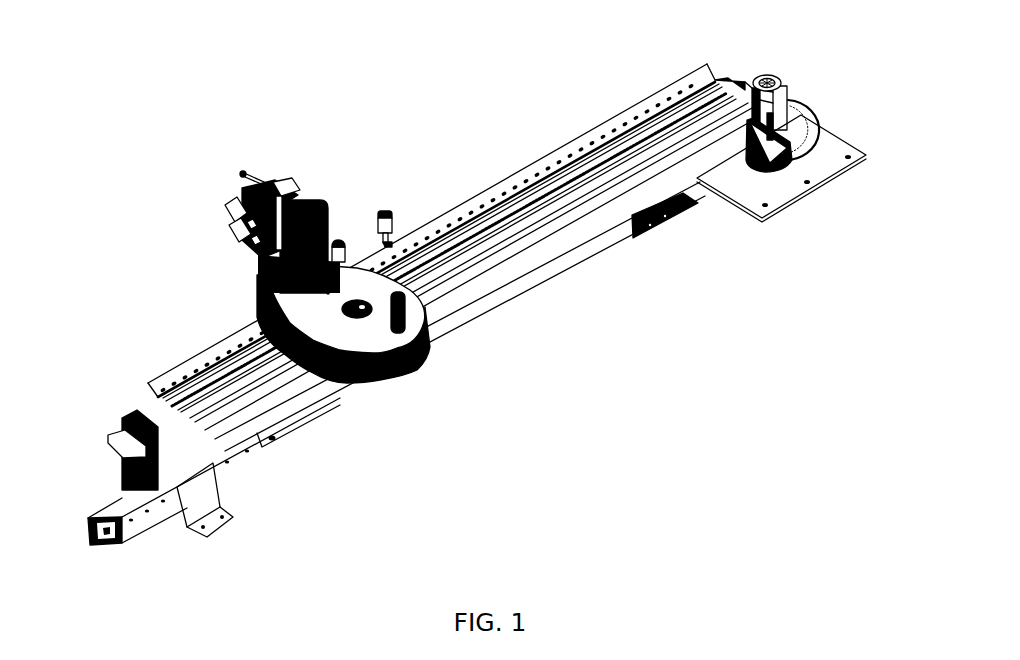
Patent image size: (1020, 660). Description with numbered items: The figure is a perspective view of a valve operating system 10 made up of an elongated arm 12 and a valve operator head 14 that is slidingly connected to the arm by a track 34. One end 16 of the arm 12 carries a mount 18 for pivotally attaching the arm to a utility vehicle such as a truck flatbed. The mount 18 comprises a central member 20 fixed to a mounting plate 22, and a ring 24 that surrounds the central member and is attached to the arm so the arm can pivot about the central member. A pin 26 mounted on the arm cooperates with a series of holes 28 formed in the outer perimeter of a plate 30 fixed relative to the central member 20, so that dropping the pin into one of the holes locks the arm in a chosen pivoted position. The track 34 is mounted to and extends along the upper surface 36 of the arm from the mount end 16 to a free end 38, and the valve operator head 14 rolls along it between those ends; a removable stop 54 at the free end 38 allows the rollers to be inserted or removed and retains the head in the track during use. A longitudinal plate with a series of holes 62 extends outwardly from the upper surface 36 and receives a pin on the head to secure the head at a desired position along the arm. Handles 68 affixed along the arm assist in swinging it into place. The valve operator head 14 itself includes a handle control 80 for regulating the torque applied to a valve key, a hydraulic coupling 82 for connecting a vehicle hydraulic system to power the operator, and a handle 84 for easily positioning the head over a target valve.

The valve operating system 10 is at (428, 115).
The arm 12 is at (652, 235).
The valve operator head 14 is at (378, 384).
The end of arm 16 is at (730, 75).
The mount 18 is at (811, 87).
The central member 20 is at (757, 73).
The mounting plate 22 is at (800, 206).
The ring 24 is at (768, 72).
The pin 26 is at (762, 122).
The holes 28 is at (806, 99).
The plate 30 is at (810, 116).
The track 34 is at (552, 217).
The upper surface 36 is at (472, 273).
The free end 38 is at (118, 468).
The removable stop 54 is at (120, 420).
The holes 62 is at (480, 188).
The handles 68 is at (375, 208).
The handle control 80 is at (240, 172).
The hydraulic coupling 82 is at (228, 231).
The handle 84 is at (407, 308).